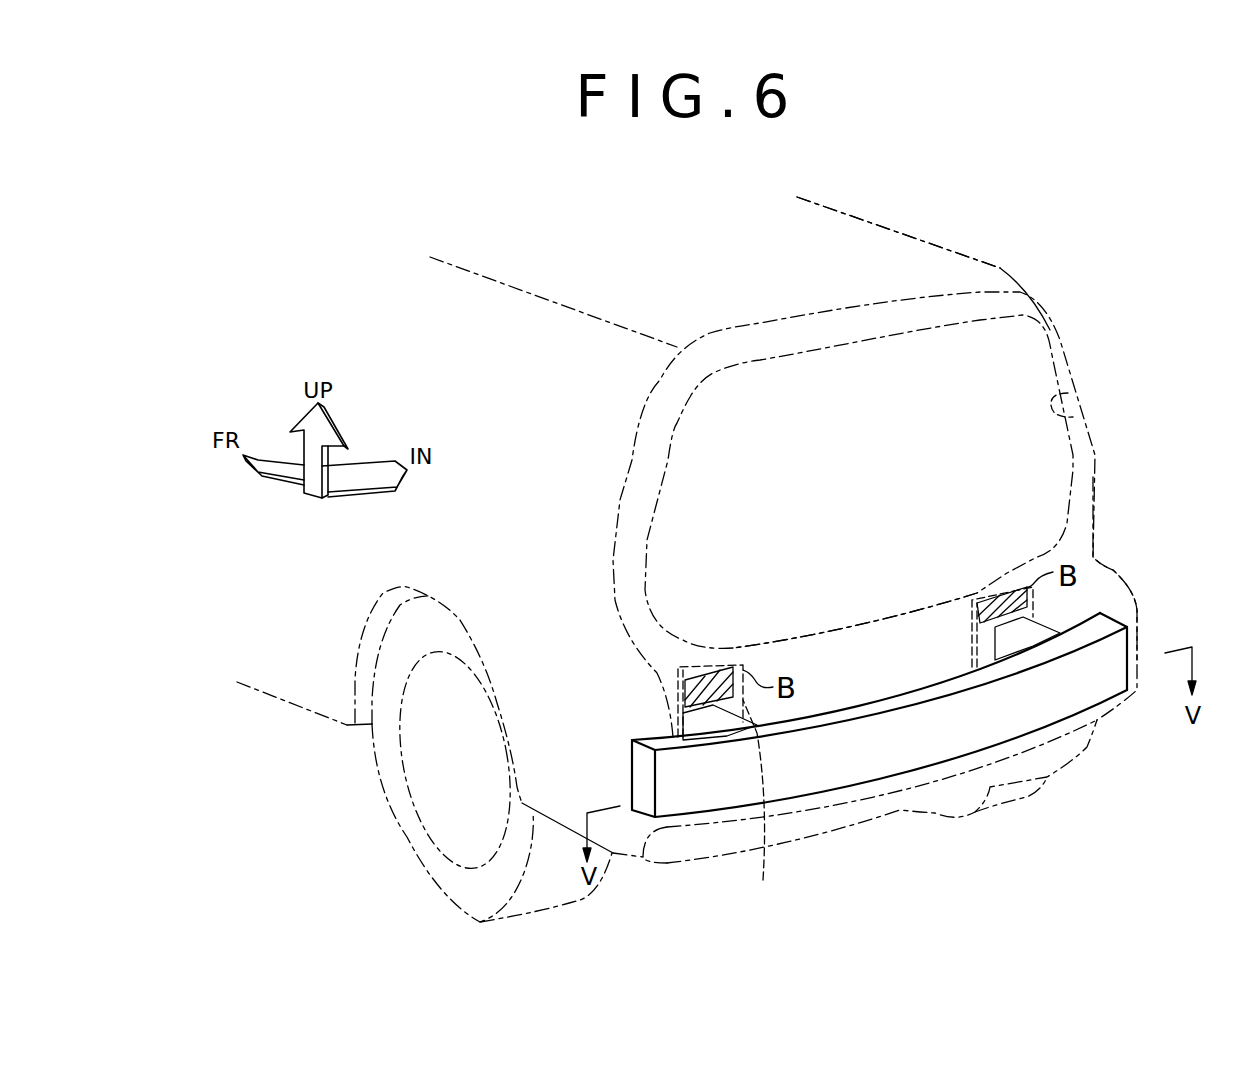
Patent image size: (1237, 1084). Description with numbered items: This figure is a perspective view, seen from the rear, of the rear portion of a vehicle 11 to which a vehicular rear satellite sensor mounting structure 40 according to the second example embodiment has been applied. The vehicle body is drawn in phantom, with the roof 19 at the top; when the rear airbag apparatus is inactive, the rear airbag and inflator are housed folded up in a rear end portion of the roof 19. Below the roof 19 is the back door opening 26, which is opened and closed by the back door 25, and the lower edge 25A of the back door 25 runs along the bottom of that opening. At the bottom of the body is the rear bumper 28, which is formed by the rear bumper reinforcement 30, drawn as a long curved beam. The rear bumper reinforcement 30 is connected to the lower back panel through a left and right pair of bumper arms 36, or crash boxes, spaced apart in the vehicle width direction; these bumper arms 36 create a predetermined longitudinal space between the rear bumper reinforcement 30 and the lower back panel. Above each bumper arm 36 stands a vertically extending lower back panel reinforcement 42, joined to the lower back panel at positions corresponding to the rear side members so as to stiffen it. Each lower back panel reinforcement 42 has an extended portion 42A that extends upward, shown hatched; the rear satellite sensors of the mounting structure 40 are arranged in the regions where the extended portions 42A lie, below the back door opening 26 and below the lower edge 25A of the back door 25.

The vehicle 11 is at (1008, 270).
The roof 19 is at (880, 246).
The back door 25 is at (1047, 473).
The lower edge of the back door 25A is at (865, 612).
The back door opening 26 is at (1078, 413).
The rear bumper 28 is at (797, 822).
The rear bumper reinforcement 30 is at (907, 762).
The bumper arms 36 is at (710, 718).
The vehicular rear satellite sensor mounting structure 40 is at (1097, 558).
The lower back panel reinforcements 42 is at (972, 640).
The extended portion 42A is at (680, 665).